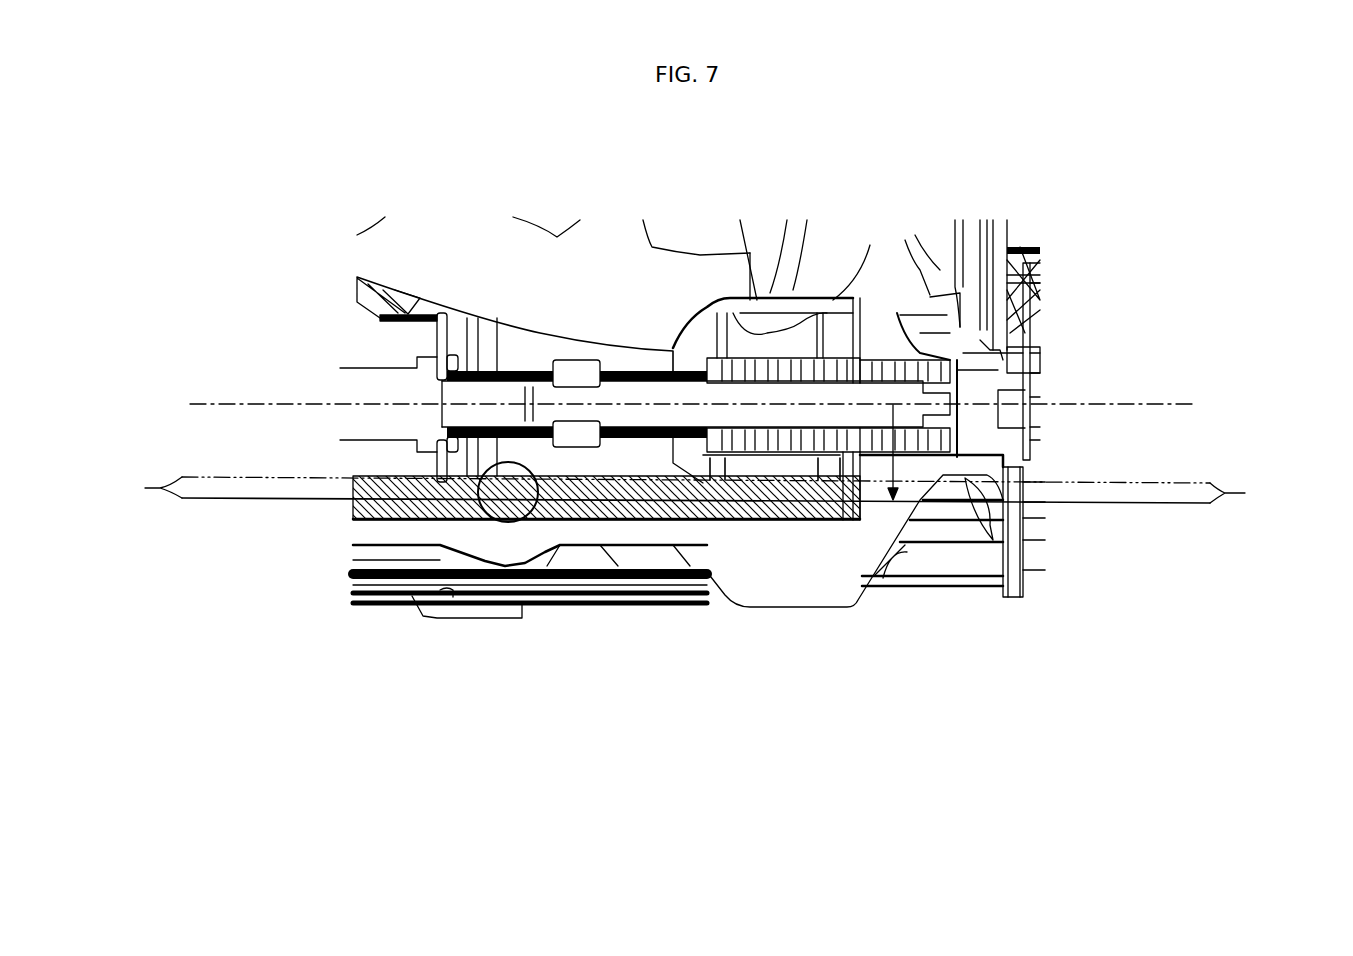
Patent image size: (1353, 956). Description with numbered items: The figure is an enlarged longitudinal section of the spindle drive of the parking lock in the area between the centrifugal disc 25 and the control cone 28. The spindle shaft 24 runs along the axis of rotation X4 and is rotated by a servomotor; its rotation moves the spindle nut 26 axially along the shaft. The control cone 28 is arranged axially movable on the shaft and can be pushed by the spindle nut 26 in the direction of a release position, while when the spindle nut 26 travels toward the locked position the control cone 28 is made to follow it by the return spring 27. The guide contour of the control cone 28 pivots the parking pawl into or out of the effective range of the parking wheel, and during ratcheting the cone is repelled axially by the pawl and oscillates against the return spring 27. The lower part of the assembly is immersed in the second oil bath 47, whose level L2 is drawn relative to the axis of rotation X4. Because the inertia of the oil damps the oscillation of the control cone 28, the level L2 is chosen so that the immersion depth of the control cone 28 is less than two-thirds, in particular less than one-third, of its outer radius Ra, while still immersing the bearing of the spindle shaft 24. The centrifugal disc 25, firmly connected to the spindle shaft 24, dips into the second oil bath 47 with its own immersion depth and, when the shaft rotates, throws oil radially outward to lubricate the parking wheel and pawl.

The spindle shaft 24 is at (630, 397).
The centrifugal disc 25 is at (438, 333).
The spindle nut 26 is at (563, 366).
The return spring 27 is at (897, 317).
The control cone 28 is at (833, 312).
The second oil bath 47 is at (747, 478).
The outer radius Ra is at (880, 462).
The axis of rotation X4 is at (1122, 408).
The level L2 is at (1135, 483).